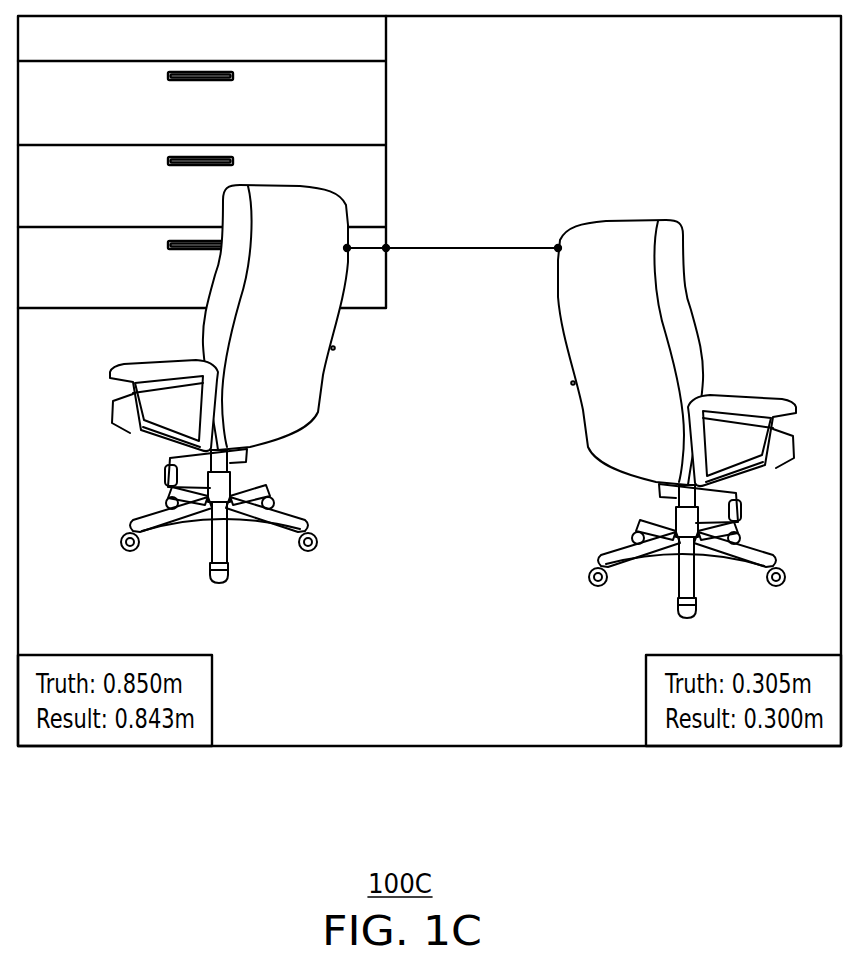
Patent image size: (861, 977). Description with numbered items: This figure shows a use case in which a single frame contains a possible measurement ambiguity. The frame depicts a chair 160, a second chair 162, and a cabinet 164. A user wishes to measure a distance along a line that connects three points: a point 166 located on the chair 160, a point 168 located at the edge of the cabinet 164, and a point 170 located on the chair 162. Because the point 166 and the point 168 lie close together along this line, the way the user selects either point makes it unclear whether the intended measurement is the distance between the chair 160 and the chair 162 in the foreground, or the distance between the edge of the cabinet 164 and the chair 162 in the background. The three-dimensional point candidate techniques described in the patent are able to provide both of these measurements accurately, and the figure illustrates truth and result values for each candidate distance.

The chair 160 is at (126, 428).
The chair 162 is at (603, 465).
The cabinet 164 is at (119, 309).
The point 166 is at (347, 253).
The point 168 is at (387, 255).
The point 170 is at (558, 247).